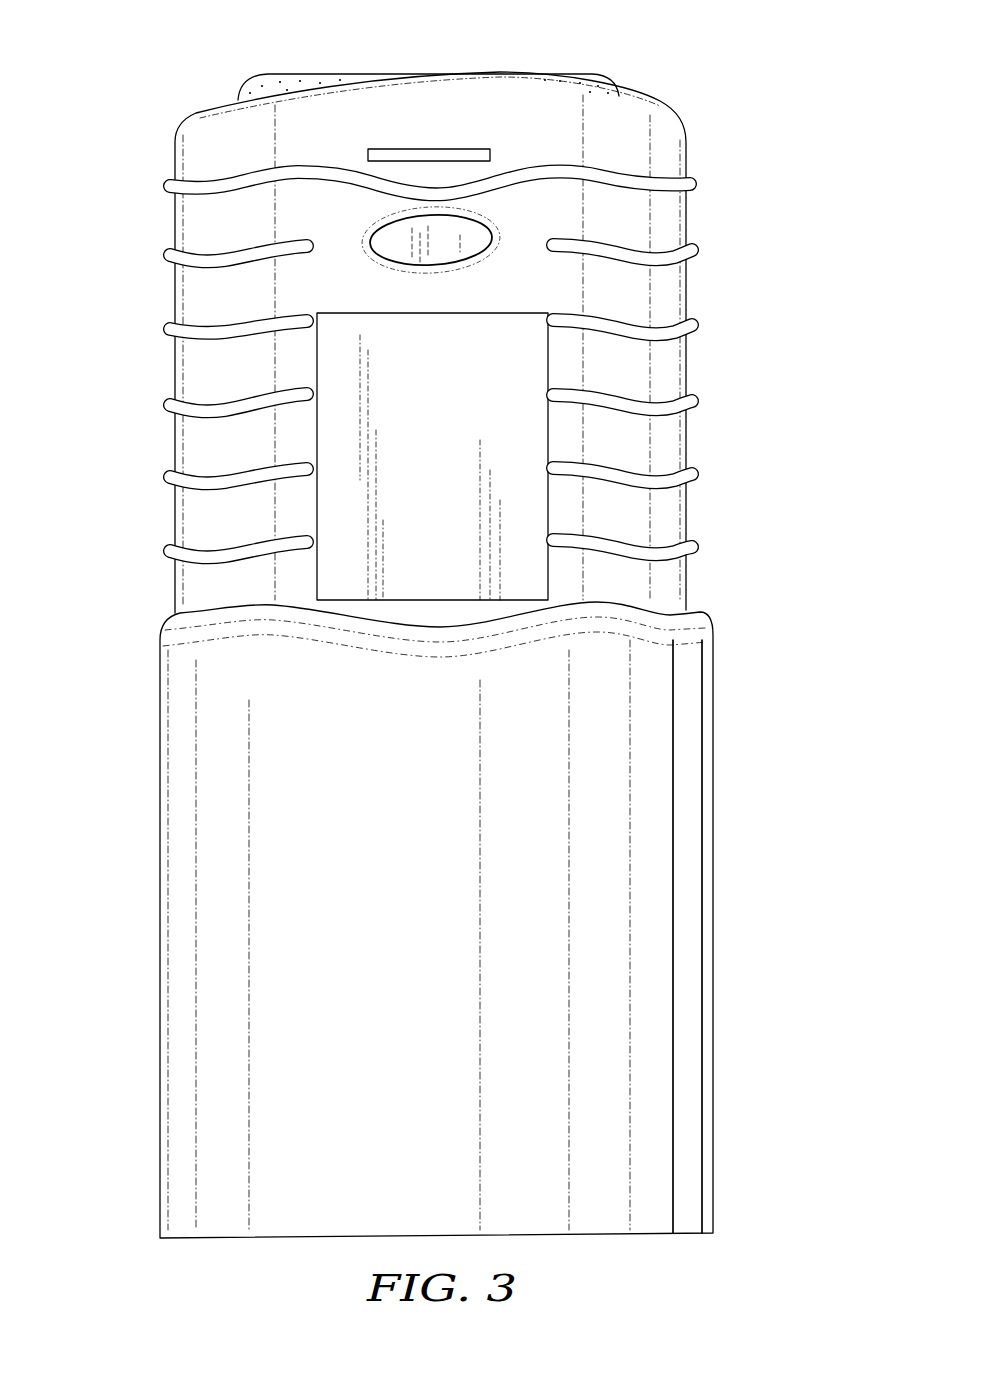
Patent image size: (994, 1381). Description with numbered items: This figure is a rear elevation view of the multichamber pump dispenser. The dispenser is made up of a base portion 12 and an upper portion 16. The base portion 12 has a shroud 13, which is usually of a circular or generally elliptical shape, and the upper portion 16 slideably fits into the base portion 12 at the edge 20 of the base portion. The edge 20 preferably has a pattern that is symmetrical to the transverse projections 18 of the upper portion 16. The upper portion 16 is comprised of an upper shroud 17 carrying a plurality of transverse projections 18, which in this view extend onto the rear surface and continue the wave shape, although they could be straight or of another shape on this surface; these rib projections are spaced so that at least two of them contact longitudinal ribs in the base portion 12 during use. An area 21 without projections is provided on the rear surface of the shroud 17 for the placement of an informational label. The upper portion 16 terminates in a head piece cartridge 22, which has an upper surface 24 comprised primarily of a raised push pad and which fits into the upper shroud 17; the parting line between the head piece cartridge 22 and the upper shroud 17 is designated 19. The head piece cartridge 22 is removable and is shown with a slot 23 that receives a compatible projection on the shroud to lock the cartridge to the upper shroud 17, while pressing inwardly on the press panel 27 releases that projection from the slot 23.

The base portion 12 is at (451, 620).
The shroud 13 is at (215, 872).
The upper portion 16 is at (453, 307).
The shroud 17 is at (636, 370).
The transverse projections 18 is at (170, 255).
The parting line 19 is at (693, 147).
The edge 20 is at (700, 613).
The area without projections 21 is at (337, 325).
The head piece cartridge 22 is at (672, 173).
The slot 23 is at (453, 148).
The upper surface 24 is at (581, 72).
The press panel 27 is at (388, 237).